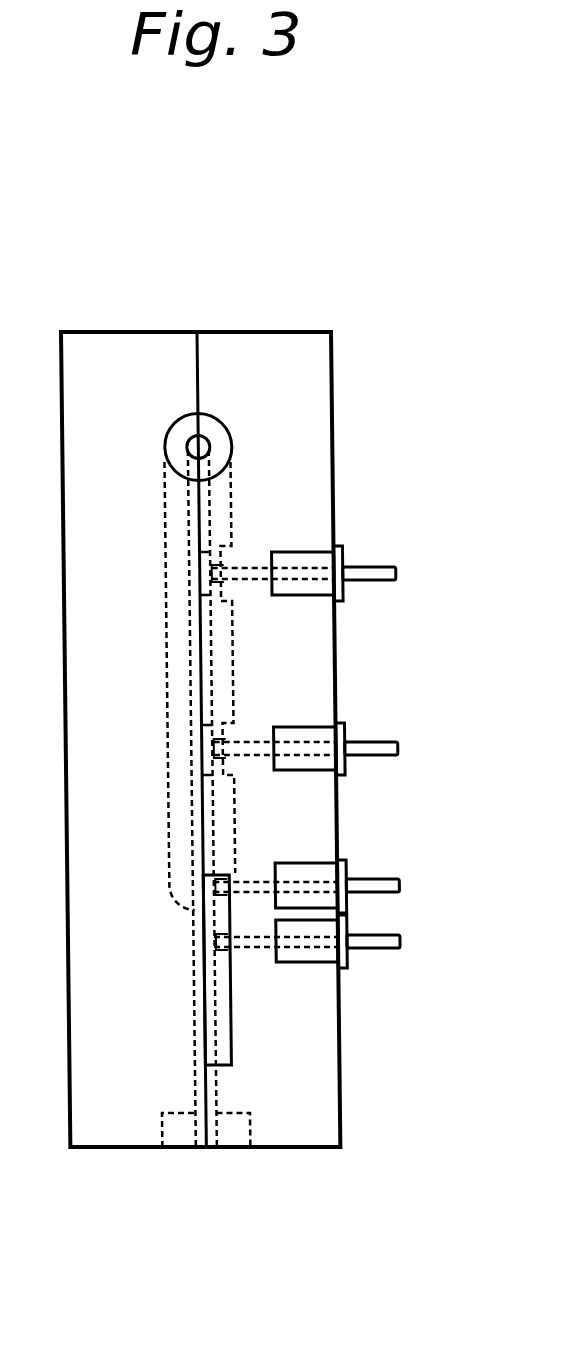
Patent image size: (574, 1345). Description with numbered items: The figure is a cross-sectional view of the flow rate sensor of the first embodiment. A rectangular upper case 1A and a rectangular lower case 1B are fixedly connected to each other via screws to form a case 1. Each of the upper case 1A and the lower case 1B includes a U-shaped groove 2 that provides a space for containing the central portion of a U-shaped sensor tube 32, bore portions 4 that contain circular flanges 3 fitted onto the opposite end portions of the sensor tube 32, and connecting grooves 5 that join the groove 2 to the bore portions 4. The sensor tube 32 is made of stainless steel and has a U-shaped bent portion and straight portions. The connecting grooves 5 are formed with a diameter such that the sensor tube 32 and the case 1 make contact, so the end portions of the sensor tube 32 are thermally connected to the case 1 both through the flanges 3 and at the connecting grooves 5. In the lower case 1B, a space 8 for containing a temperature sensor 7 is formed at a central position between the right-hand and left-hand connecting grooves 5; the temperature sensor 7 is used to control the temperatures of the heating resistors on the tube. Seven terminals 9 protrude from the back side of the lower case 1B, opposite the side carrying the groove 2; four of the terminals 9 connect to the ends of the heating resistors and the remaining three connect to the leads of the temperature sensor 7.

The case 1 is at (240, 670).
The upper case 1A is at (107, 358).
The lower case 1B is at (265, 358).
The U-shaped groove 2 is at (250, 513).
The sensor tube 32 is at (221, 438).
The connecting grooves 5 is at (178, 987).
The temperature sensor 7 is at (223, 1007).
The space 8 is at (258, 989).
The terminals 9 is at (347, 600).
The circular flanges 3 is at (177, 1133).
The bore portions 4 is at (272, 1131).